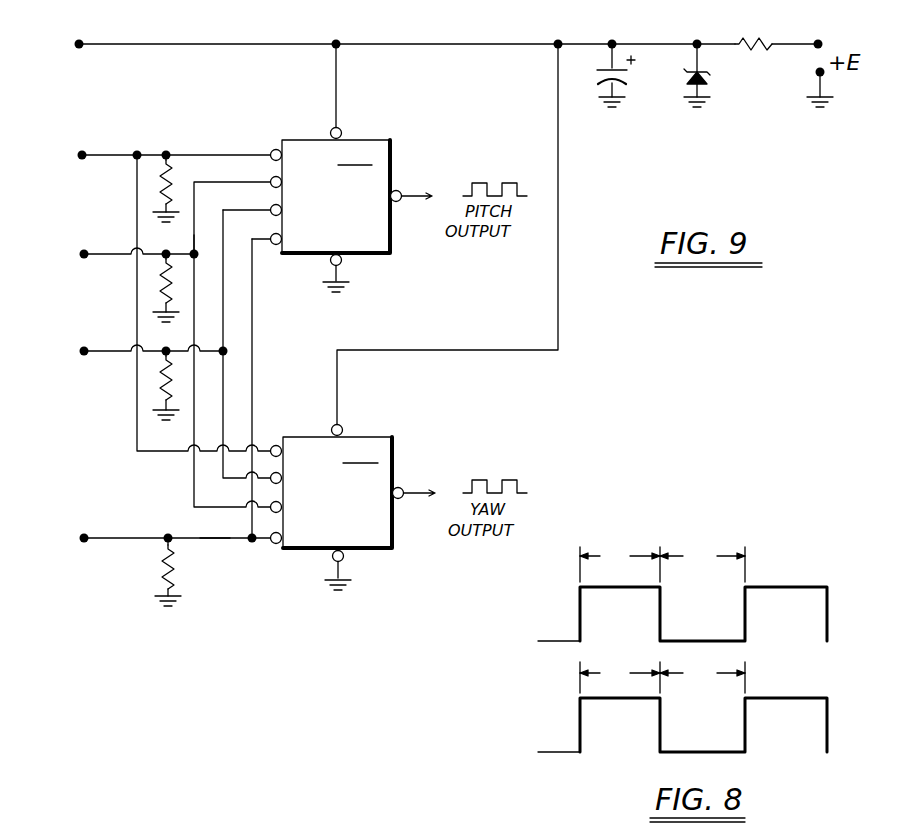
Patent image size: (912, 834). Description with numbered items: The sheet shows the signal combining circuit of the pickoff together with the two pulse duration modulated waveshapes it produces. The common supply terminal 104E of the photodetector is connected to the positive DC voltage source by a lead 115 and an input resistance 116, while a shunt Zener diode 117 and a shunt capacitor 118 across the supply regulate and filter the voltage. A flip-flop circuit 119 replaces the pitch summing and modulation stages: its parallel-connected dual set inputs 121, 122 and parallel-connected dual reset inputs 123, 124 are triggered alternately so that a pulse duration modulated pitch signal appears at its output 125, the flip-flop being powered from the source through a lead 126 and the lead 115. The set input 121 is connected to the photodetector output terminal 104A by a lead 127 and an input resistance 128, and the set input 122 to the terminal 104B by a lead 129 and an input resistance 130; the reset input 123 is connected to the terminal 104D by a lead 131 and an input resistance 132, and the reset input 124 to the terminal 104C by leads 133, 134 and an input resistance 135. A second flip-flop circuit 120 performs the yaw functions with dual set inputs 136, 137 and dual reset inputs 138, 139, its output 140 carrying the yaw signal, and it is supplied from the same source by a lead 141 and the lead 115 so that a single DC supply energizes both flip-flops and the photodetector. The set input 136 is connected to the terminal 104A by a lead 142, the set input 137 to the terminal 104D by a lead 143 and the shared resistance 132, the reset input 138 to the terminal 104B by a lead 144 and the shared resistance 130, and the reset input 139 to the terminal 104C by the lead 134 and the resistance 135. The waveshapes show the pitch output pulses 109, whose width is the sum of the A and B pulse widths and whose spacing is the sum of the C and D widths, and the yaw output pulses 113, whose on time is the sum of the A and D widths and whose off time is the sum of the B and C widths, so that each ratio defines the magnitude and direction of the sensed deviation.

In FIG. 9, the output terminal of the photodetector 104A is at (82, 155).
In FIG. 9, the output terminal of the photodetector 104B is at (94, 231).
In FIG. 9, the output terminal of the photodetector 104C is at (84, 538).
In FIG. 9, the output terminal of the photodetector 104D is at (84, 351).
In FIG. 9, the common supply terminal of the photodetector 104E is at (110, 18).
In FIG. 8, the output pulses 109 is at (828, 617).
In FIG. 8, the output pulses 113 is at (830, 726).
In FIG. 9, the lead 115 is at (336, 44).
In FIG. 9, the input resistance 116 is at (757, 40).
In FIG. 9, the Zener diode 117 is at (708, 82).
In FIG. 9, the shunt capacitor 118 is at (626, 80).
In FIG. 9, the flip-flop circuit 119 is at (336, 216).
In FIG. 9, the second flip-flop circuit 120 is at (337, 513).
In FIG. 9, the set input 121 is at (273, 150).
In FIG. 9, the set input 122 is at (271, 184).
In FIG. 9, the reset input 123 is at (271, 211).
In FIG. 9, the reset input 124 is at (271, 240).
In FIG. 9, the output 125 is at (410, 187).
In FIG. 9, the lead 126 is at (337, 112).
In FIG. 9, the lead 127 is at (168, 158).
In FIG. 9, the input resistance 128 is at (162, 181).
In FIG. 9, the lead 129 is at (195, 240).
In FIG. 9, the input resistance 130 is at (162, 282).
In FIG. 9, the lead 131 is at (223, 290).
In FIG. 9, the input resistance 132 is at (163, 385).
In FIG. 9, the lead 133 is at (252, 318).
In FIG. 9, the lead 134 is at (214, 542).
In FIG. 9, the input resistance 135 is at (164, 558).
In FIG. 9, the set input 136 is at (276, 445).
In FIG. 9, the set input 137 is at (270, 480).
In FIG. 9, the reset input 138 is at (270, 509).
In FIG. 9, the reset input 139 is at (272, 546).
In FIG. 9, the output 140 is at (421, 485).
In FIG. 9, the lead 141 is at (486, 330).
In FIG. 9, the lead 142 is at (143, 452).
In FIG. 9, the lead 143 is at (223, 370).
In FIG. 9, the lead 144 is at (194, 492).